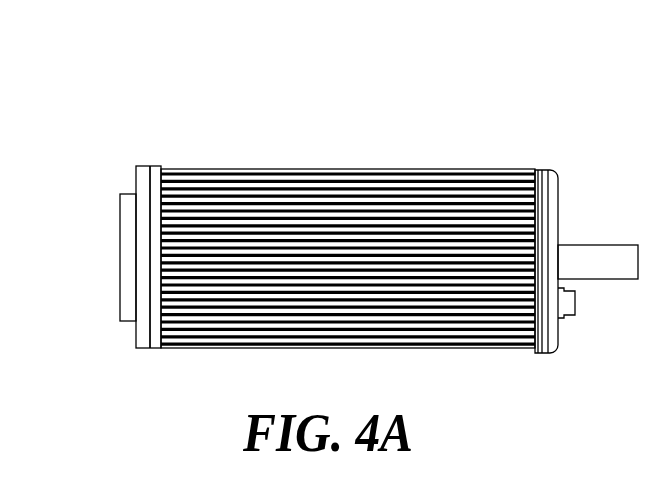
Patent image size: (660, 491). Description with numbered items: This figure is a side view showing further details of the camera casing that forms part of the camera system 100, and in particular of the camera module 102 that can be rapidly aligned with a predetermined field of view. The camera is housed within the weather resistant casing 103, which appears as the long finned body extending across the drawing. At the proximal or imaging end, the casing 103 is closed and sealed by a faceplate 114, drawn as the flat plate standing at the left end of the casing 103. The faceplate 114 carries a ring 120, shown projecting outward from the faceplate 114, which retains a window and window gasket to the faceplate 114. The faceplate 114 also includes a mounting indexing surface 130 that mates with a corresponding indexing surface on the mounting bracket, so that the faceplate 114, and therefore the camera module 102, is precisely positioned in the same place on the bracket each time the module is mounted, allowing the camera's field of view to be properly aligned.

The camera module 100 is at (520, 92).
The camera module 102 is at (362, 162).
The weather resistant casing 103 is at (453, 340).
The faceplate 114 is at (136, 335).
The ring 120 is at (112, 312).
The mounting indexing surface 130 is at (128, 170).